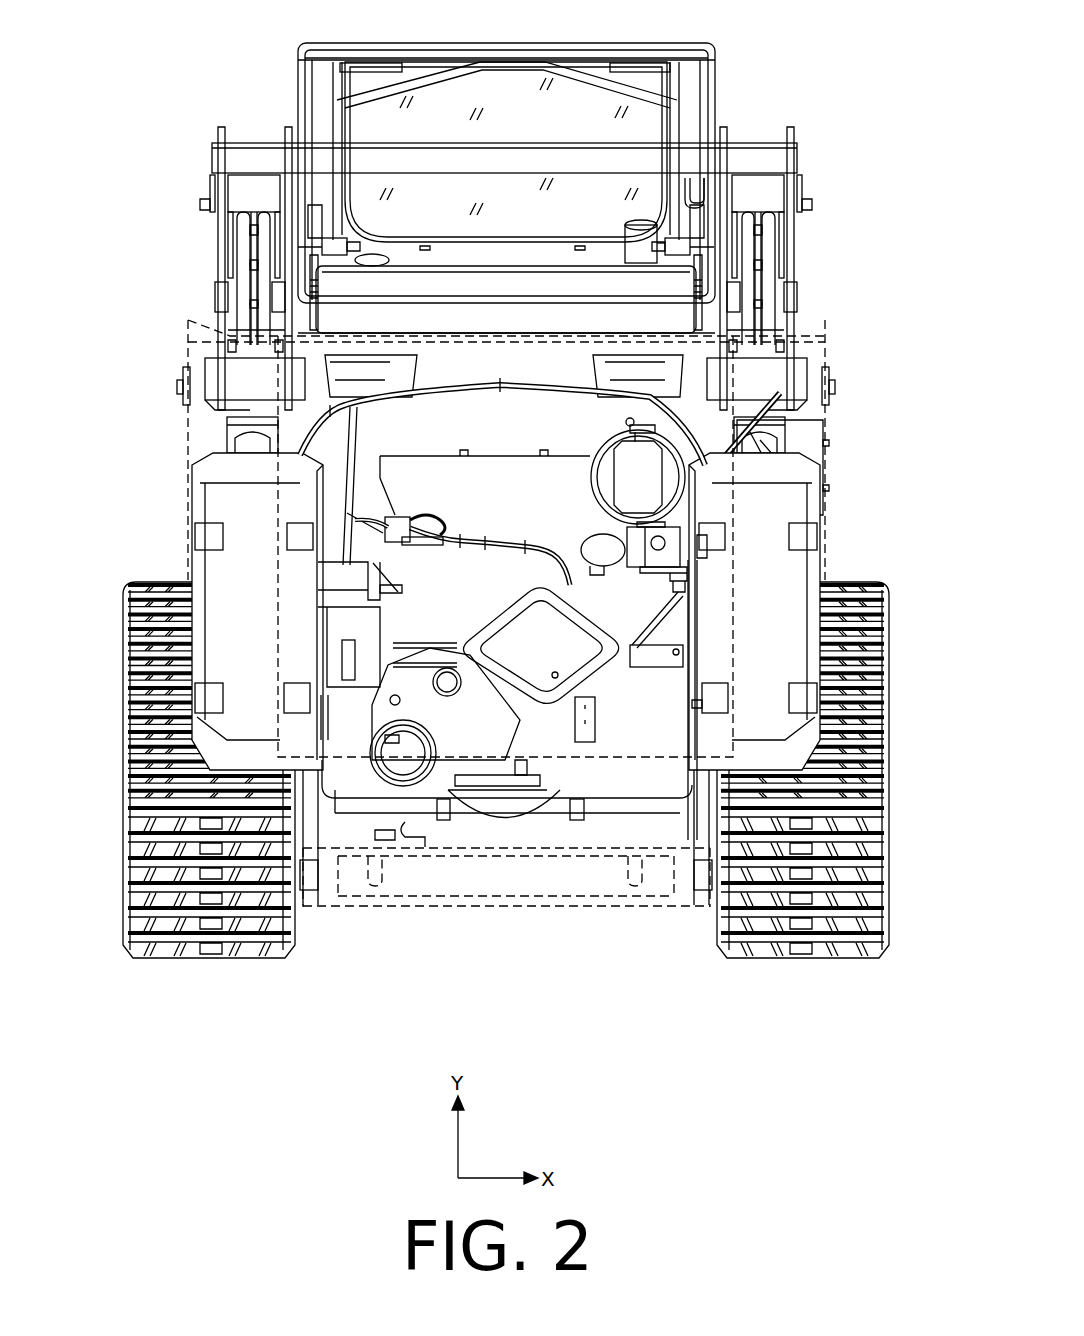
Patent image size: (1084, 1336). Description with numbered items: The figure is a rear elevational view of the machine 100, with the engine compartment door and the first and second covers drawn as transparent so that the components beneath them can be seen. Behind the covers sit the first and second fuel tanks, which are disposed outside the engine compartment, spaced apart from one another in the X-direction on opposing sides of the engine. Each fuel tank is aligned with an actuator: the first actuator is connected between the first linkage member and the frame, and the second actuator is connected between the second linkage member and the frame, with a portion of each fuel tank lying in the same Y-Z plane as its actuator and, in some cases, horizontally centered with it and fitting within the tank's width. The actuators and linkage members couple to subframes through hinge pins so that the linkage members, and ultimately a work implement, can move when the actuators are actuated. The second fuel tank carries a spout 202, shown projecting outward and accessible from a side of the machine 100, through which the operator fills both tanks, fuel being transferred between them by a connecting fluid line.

The machine 100 is at (722, 40).
The spout 202 is at (845, 464).